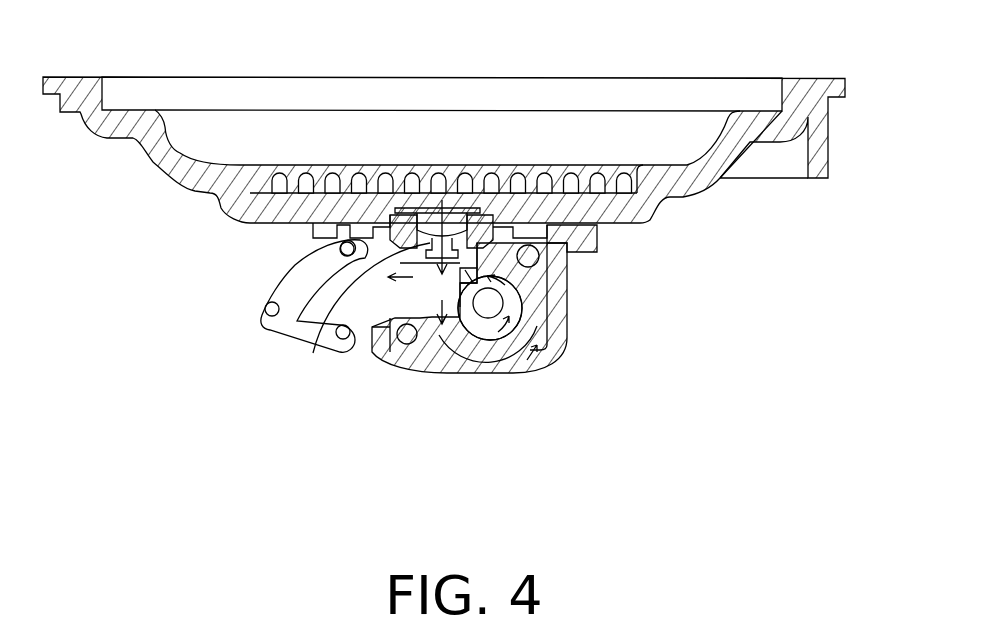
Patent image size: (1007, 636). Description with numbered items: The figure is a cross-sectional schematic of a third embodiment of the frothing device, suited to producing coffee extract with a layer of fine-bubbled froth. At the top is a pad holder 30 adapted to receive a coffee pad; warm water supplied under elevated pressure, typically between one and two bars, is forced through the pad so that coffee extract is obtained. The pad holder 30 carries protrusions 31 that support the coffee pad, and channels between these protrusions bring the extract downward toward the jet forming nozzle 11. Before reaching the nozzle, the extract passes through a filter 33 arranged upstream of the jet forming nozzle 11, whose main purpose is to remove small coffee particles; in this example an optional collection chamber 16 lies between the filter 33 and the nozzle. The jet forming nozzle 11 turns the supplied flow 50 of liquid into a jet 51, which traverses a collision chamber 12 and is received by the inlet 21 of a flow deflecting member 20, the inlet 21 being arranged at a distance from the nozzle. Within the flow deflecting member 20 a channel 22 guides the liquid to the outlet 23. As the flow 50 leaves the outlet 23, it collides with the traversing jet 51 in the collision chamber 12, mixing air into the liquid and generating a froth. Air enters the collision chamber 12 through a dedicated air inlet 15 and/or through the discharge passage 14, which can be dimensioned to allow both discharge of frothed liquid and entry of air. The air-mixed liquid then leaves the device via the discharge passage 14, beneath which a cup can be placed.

The pad holder 30 is at (727, 120).
The protrusions 31 is at (610, 172).
The filter 33 is at (440, 205).
The flow of liquid 50 is at (437, 210).
The jet forming nozzle 11 is at (313, 228).
The collection chamber 16 is at (530, 198).
The air inlet 15 is at (565, 258).
The jet 51 is at (565, 292).
The channel 22 is at (550, 333).
The flow deflecting member 20 is at (537, 373).
The discharge passage 14 is at (266, 320).
The collision chamber 12 is at (323, 330).
The inlet 21 is at (413, 357).
The outlet 23 is at (470, 330).